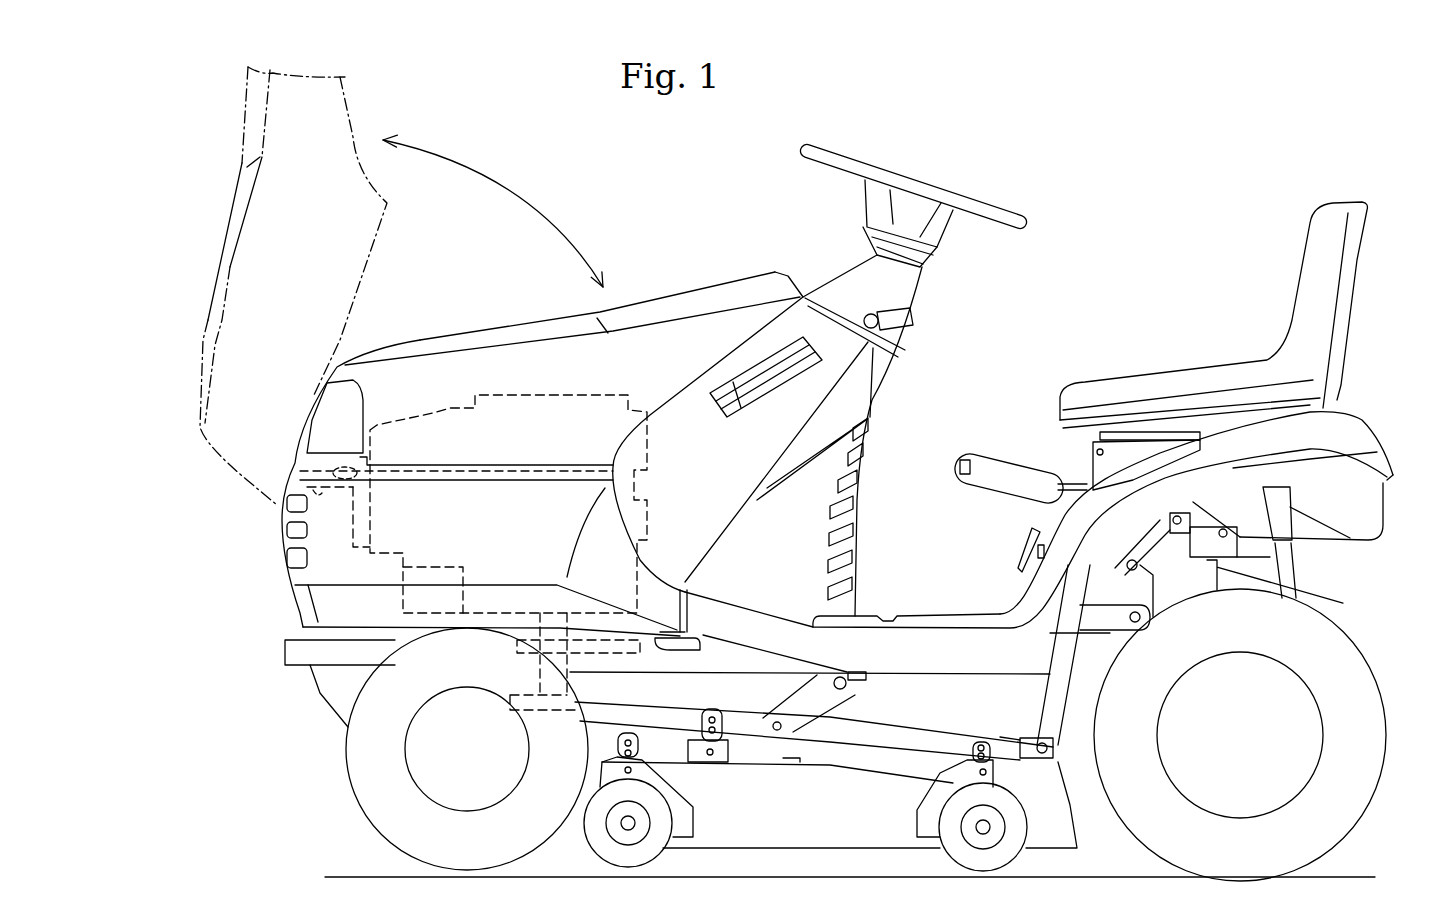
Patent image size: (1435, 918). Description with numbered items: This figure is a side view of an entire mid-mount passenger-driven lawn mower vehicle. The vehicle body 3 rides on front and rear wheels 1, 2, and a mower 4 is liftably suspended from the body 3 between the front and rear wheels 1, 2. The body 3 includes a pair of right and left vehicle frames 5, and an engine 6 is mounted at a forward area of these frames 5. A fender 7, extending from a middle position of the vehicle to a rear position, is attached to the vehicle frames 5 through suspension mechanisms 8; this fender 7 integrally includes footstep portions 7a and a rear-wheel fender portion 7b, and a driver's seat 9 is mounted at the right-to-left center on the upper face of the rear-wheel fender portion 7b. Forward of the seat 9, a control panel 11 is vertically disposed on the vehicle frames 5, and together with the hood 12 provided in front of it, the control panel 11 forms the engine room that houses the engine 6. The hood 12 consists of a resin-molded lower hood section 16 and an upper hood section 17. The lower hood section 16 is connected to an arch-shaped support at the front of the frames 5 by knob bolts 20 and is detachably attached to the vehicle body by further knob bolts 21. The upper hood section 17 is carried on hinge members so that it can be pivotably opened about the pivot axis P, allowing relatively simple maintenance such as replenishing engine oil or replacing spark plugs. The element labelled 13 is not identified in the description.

The front wheel 1 is at (360, 803).
The rear wheel 2 is at (1347, 837).
The vehicle body 3 is at (752, 257).
The mower 4 is at (880, 783).
The vehicle frames 5 is at (718, 667).
The engine 6 is at (423, 413).
The fender 7 is at (1015, 601).
The footstep portions 7a is at (923, 627).
The rear-wheel fender portion 7b is at (1367, 413).
The suspension mechanisms 8 is at (1293, 552).
The driver's seat 9 is at (1183, 370).
The control panel 11 is at (893, 380).
The hood 12 is at (520, 317).
The steering wheel 13 is at (980, 208).
The lower hood section 16 is at (323, 567).
The upper hood section 17 is at (226, 227).
The knob bolts 20 is at (343, 487).
The knob bolts 21 is at (707, 637).
The pivot axis P is at (297, 503).